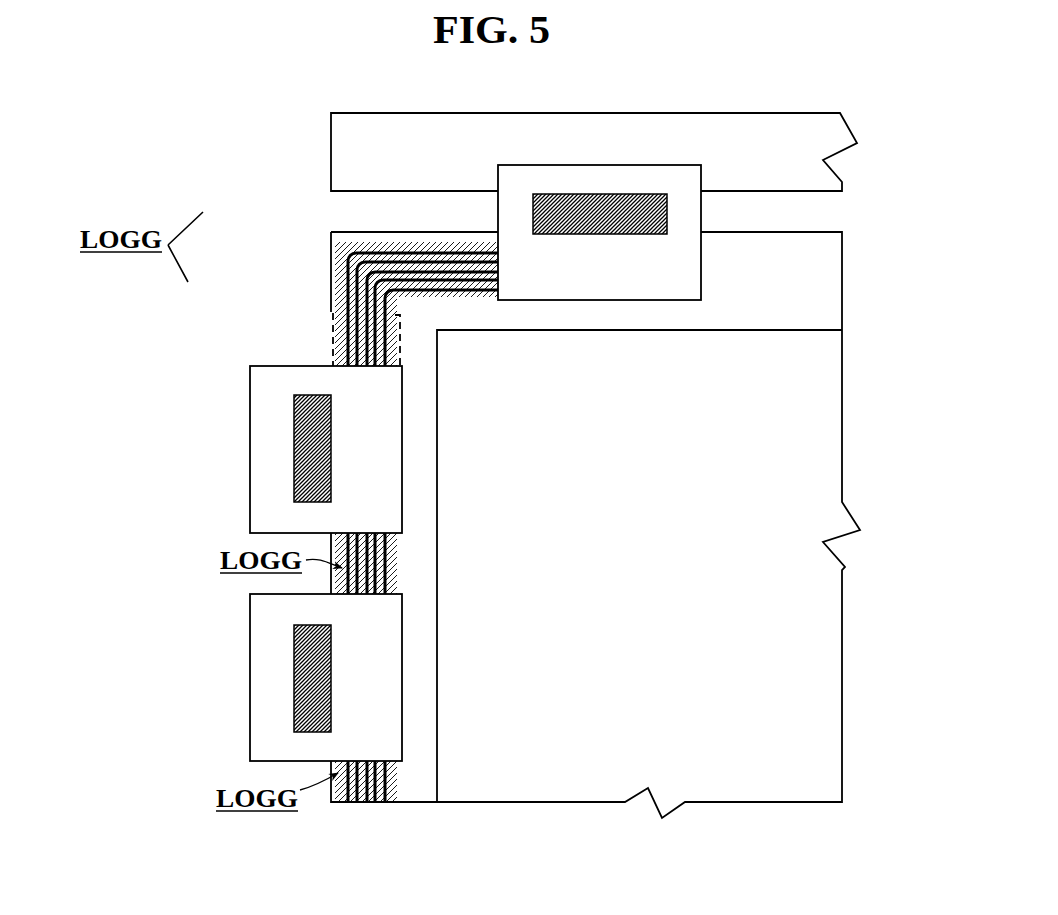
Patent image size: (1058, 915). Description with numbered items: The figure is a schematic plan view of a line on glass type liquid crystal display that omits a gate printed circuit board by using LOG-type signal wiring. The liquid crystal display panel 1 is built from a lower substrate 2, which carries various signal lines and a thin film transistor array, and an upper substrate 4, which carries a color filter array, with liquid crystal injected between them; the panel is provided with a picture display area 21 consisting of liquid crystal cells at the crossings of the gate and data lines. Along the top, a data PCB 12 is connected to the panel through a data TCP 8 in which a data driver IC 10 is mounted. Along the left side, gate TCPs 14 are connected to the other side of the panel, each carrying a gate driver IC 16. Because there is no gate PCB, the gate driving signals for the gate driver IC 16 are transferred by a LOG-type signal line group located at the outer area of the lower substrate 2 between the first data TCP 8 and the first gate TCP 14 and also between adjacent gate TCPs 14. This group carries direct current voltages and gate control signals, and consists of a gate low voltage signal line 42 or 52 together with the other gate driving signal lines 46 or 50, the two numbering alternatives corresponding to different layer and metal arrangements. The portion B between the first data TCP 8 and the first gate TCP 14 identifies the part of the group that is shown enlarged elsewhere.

The liquid crystal display panel 1 is at (617, 525).
The lower substrate 2 is at (842, 295).
The upper substrate 4 is at (659, 566).
The data TCP 8 is at (619, 222).
The data driver IC 10 is at (633, 236).
The data PCB 12 is at (331, 152).
The gate TCP 14 is at (292, 449).
The gate driver IC 16 is at (297, 473).
The picture display area 21 is at (655, 554).
The gate low voltage signal line 42 is at (352, 498).
The gate low voltage signal line 52 is at (333, 249).
The gate driving signal lines 46 is at (343, 527).
The gate driving signal lines 50 is at (346, 253).
The portion B is at (333, 318).